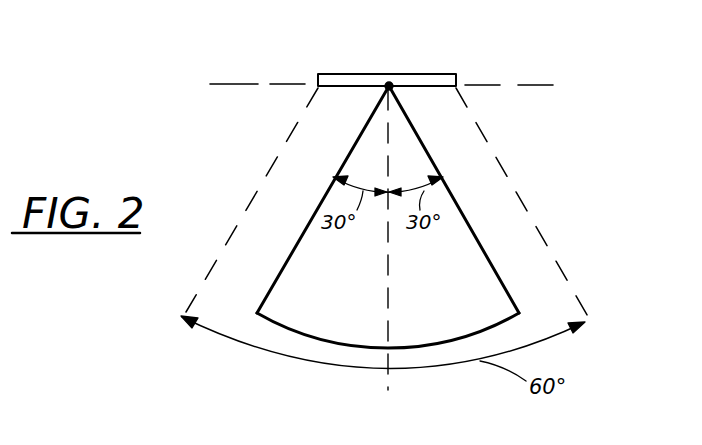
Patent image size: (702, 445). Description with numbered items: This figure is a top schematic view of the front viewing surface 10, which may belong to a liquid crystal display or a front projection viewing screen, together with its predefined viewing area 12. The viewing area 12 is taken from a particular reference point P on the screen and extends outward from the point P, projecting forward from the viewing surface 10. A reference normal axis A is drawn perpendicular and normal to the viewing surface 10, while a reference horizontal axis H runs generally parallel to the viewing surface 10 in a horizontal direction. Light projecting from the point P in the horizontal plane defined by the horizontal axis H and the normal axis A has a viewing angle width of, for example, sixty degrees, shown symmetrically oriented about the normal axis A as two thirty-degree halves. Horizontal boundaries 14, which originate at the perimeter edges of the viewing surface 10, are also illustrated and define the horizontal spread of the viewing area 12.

The front viewing surface 10 is at (457, 74).
The viewing area 12 is at (457, 268).
The horizontal boundaries 14 is at (249, 196).
The reference point P is at (390, 84).
The reference horizontal axis H is at (214, 84).
The reference normal axis A is at (378, 253).